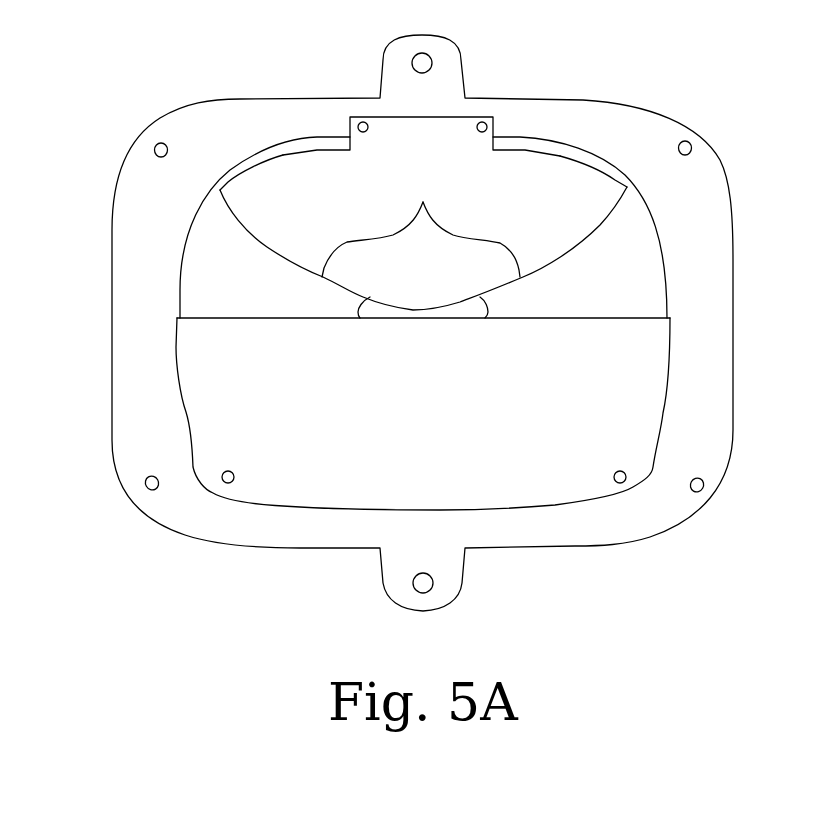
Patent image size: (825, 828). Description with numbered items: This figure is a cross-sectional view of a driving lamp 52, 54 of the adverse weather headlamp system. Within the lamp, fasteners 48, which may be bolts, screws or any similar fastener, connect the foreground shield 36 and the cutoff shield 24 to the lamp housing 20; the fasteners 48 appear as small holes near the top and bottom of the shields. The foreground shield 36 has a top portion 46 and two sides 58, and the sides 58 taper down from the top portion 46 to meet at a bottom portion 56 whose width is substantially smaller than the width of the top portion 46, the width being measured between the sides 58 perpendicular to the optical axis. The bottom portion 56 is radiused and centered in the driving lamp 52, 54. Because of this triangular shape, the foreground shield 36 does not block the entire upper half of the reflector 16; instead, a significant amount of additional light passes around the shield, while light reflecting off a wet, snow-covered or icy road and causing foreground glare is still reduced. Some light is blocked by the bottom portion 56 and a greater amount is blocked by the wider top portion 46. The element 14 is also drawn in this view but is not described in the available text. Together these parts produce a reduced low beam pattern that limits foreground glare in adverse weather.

The spring wire 14 is at (365, 308).
The reflector 16 is at (448, 323).
The lamp housing 20 is at (710, 163).
The cutoff shield 24 is at (637, 412).
The foreground shield 36 is at (520, 193).
The top portion 46 is at (315, 150).
The fasteners 48 is at (363, 122).
The driving lamp 52 is at (492, 66).
The driving lamp 54 is at (423, 583).
The bottom portion 56 is at (418, 308).
The sides 58 is at (421, 225).